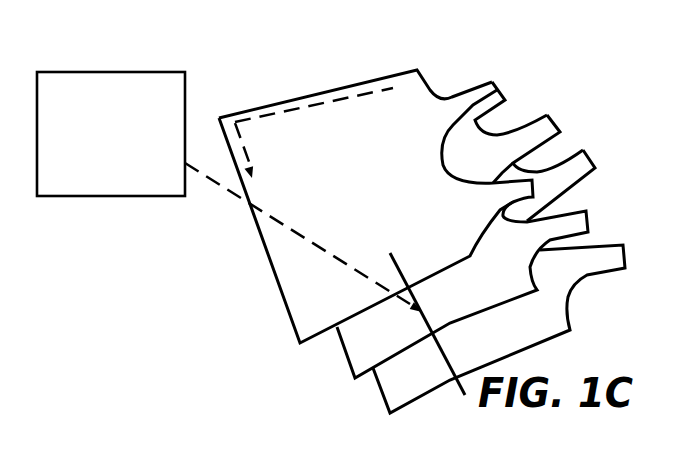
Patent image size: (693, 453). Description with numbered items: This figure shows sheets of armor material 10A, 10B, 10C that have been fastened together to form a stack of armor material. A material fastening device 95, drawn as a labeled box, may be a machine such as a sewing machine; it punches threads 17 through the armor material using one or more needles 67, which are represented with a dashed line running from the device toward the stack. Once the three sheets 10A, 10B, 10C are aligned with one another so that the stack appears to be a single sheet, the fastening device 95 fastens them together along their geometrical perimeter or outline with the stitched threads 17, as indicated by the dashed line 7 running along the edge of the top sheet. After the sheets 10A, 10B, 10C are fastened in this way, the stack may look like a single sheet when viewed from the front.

The material fastening device 95 is at (137, 72).
The dashed line 7 is at (353, 90).
The sheet of armor material 10A is at (488, 98).
The sheet of armor material 10B is at (538, 128).
The sheet of armor material 10C is at (575, 163).
The threads 17 is at (440, 347).
The needles 67 is at (277, 215).